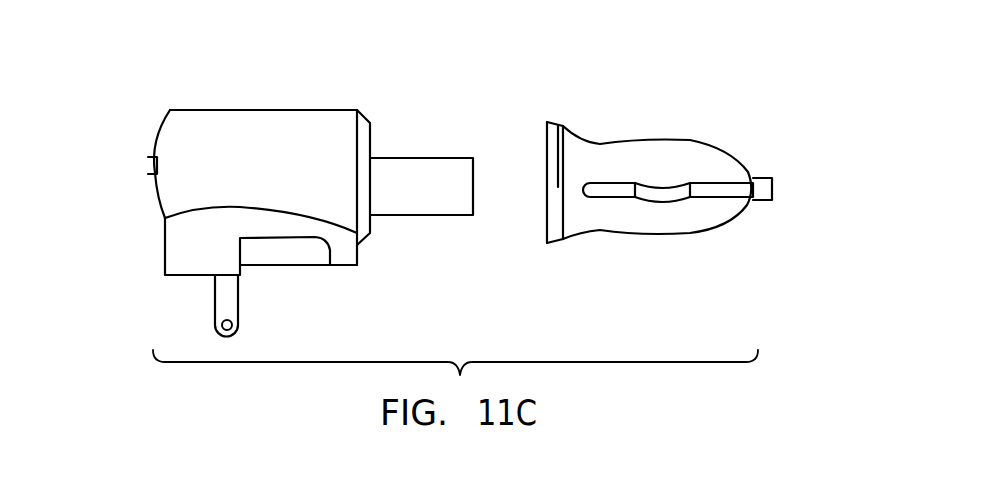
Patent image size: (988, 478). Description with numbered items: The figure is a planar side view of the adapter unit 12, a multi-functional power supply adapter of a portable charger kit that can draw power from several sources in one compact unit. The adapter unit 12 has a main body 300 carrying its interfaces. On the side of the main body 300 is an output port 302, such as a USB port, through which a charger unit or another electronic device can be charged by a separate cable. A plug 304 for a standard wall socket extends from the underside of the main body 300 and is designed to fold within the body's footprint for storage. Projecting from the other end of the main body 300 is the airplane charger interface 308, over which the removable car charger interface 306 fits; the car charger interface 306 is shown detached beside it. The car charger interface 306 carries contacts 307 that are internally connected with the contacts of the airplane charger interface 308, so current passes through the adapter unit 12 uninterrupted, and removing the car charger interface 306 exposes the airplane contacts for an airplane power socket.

The adapter unit 12 is at (253, 195).
The main body 300 is at (173, 200).
The output port 302 is at (127, 164).
The plug 304 is at (228, 307).
The car charger interface 306 is at (659, 201).
The contacts 307 is at (663, 190).
The airplane charger interface 308 is at (420, 172).